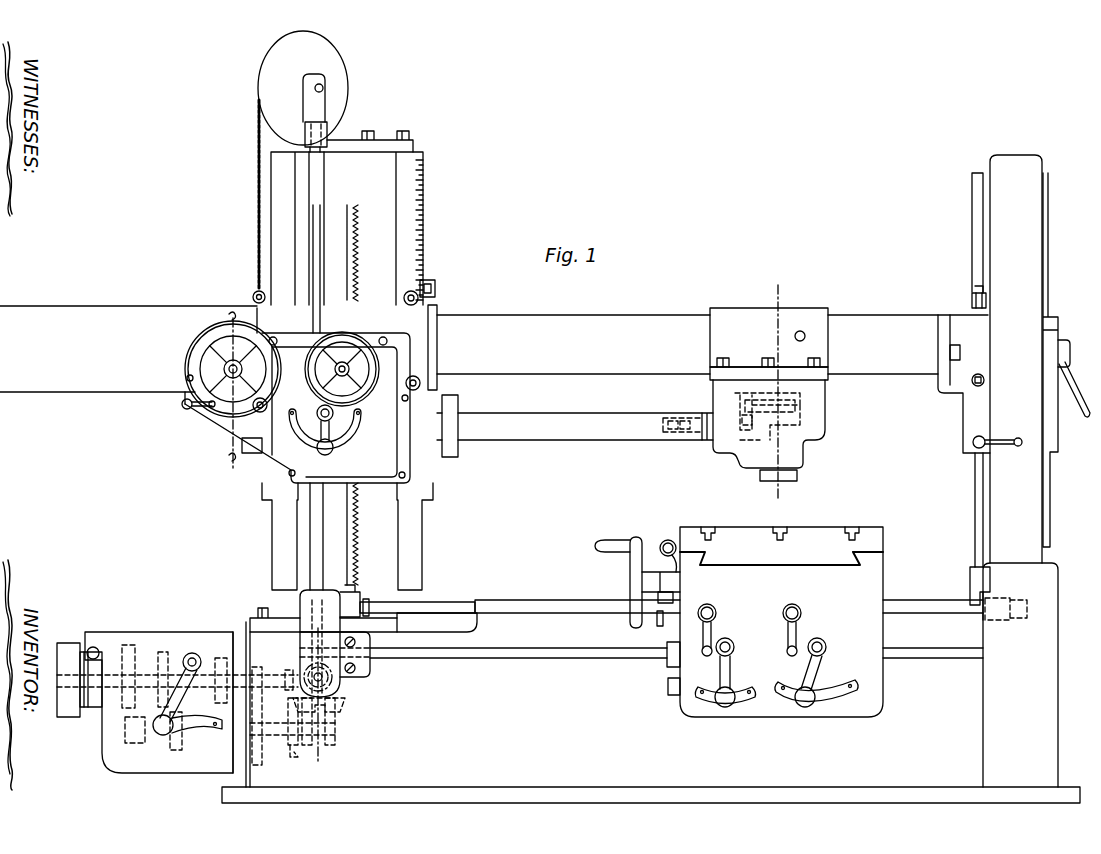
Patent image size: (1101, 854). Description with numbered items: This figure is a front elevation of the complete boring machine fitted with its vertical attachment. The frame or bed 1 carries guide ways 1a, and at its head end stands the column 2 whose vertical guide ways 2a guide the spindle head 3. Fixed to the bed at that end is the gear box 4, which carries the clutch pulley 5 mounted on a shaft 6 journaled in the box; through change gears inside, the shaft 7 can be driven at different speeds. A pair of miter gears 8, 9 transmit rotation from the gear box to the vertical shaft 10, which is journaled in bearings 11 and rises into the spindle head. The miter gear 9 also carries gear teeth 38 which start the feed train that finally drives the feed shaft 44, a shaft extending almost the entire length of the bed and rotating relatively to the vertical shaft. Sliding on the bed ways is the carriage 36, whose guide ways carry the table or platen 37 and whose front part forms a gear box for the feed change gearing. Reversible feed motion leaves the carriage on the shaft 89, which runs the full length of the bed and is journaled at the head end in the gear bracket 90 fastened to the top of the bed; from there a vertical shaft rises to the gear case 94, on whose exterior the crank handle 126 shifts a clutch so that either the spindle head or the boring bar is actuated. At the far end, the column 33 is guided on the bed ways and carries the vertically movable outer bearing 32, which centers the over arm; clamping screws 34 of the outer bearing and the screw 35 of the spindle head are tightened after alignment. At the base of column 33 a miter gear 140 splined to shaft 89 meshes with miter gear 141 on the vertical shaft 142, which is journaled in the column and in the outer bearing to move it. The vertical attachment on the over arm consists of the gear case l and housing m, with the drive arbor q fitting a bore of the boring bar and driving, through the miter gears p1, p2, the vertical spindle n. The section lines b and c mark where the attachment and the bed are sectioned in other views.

The frame or bed 1 is at (1060, 748).
The guide ways 1a is at (503, 599).
The column 2 is at (262, 612).
The vertical guide ways 2a is at (413, 233).
The spindle head 3 is at (258, 480).
The gear box 4 is at (162, 775).
The clutch pulley 5 is at (67, 641).
The shaft 6 is at (140, 676).
The shaft 7 is at (114, 732).
The miter gear 8 is at (292, 755).
The miter gear 9 is at (348, 703).
The vertical shaft 10 is at (327, 184).
The bearings 11 is at (330, 132).
The outer bearing 32 is at (958, 313).
The column 33 is at (1010, 160).
The clamping screws 34 is at (960, 390).
The screw 35 is at (408, 306).
The carriage 36 is at (884, 567).
The table or platen 37 is at (883, 527).
The gear teeth 38 is at (406, 678).
The feed shaft 44 is at (533, 661).
The shaft 89 is at (455, 601).
The gear bracket 90 is at (353, 598).
The gear case 94 is at (396, 451).
The crank handle 126 is at (330, 454).
The miter gear 140 is at (988, 618).
The miter gear 141 is at (961, 596).
The vertical shaft 142 is at (975, 550).
The housing m is at (800, 308).
The vertical spindle n is at (800, 477).
The gear case l is at (826, 434).
The drive arbor q is at (677, 430).
The miter gear p1 is at (694, 447).
The miter gear p2 is at (810, 403).
The section line b— b is at (781, 491).
The section line c— c is at (317, 694).